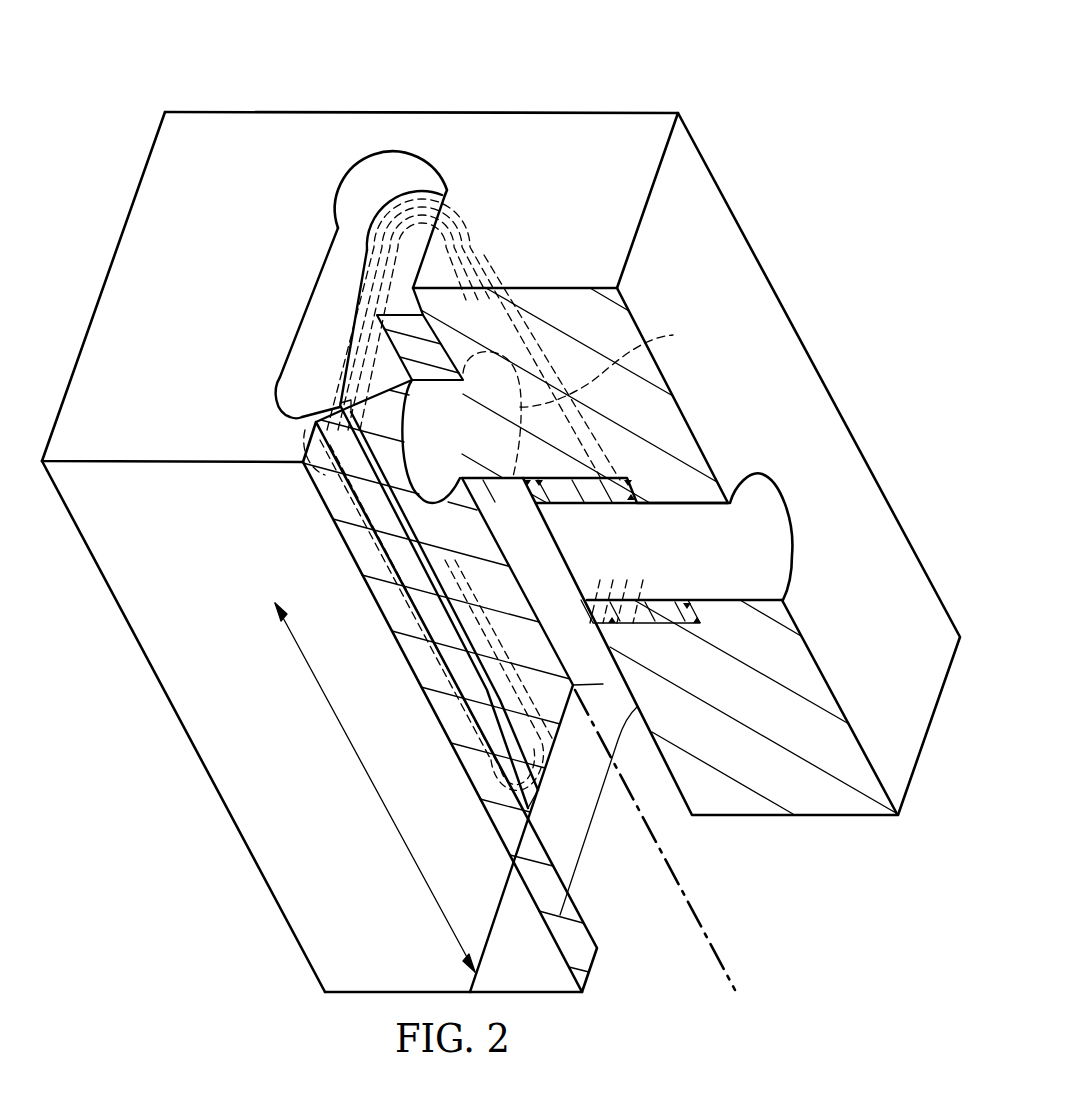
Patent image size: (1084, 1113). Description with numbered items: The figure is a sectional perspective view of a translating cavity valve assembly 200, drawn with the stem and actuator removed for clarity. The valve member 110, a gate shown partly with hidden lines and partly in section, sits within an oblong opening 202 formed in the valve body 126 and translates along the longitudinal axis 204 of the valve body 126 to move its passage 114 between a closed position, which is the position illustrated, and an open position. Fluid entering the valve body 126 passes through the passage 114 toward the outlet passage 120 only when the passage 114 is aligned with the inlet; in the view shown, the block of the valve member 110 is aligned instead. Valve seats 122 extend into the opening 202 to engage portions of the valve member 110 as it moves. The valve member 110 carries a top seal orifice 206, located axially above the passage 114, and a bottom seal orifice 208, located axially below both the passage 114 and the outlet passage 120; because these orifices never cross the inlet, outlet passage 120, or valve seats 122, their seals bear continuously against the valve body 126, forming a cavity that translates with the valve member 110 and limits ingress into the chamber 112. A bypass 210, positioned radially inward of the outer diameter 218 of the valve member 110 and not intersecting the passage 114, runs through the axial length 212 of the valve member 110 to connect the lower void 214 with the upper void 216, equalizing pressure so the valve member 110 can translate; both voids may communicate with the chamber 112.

The valve assembly 200 is at (752, 85).
The oblong opening 202 is at (410, 152).
The valve member 110 is at (367, 257).
The upper void 216 is at (314, 296).
The outer diameter 218 is at (293, 360).
The top seal orifice 206 is at (497, 262).
The passage 114 is at (640, 340).
The valve seats 122 is at (668, 600).
The outlet passage 120 is at (782, 553).
The chamber 112 is at (657, 727).
The bypass 210 is at (443, 597).
The valve body 126 is at (188, 725).
The axial length 212 is at (373, 790).
The bottom seal orifice 208 is at (473, 758).
The lower void 214 is at (667, 813).
The longitudinal axis 204 is at (688, 907).